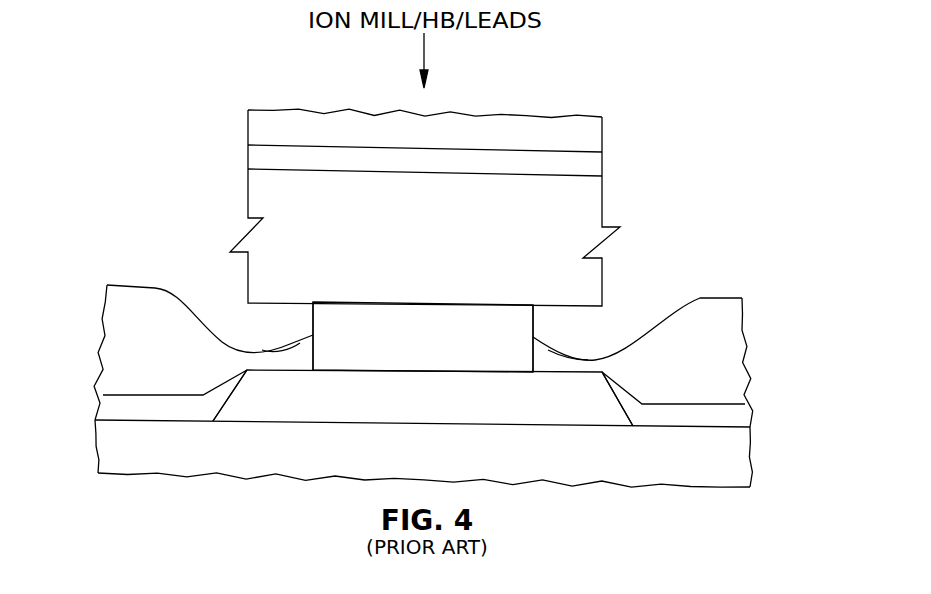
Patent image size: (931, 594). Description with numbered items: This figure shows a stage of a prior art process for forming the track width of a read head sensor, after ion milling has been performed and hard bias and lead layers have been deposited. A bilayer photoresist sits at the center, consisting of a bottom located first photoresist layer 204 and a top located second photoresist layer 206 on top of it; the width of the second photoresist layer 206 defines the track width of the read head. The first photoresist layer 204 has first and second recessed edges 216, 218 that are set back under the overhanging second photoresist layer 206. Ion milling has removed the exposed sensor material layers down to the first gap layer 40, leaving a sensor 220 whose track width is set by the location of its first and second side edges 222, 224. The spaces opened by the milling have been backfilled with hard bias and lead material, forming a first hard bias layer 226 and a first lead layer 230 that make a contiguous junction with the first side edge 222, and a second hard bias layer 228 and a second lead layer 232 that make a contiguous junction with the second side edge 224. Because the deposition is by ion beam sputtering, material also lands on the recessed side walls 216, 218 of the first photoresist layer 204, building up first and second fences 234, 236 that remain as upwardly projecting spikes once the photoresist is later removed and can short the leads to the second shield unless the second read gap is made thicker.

The second photoresist layer 206 is at (585, 198).
The first photoresist layer 204 is at (373, 307).
The first recessed edge 216 is at (312, 320).
The second recessed edge 218 is at (535, 322).
The first lead layer 230 is at (138, 293).
The second lead layer 232 is at (713, 302).
The first fence 234 is at (297, 342).
The second fence 236 is at (553, 345).
The sensor 220 is at (587, 418).
The first side edge 222 is at (236, 385).
The second side edge 224 is at (620, 389).
The first hard bias layer 226 is at (133, 400).
The second hard bias layer 228 is at (717, 410).
The first gap layer 40 is at (680, 475).